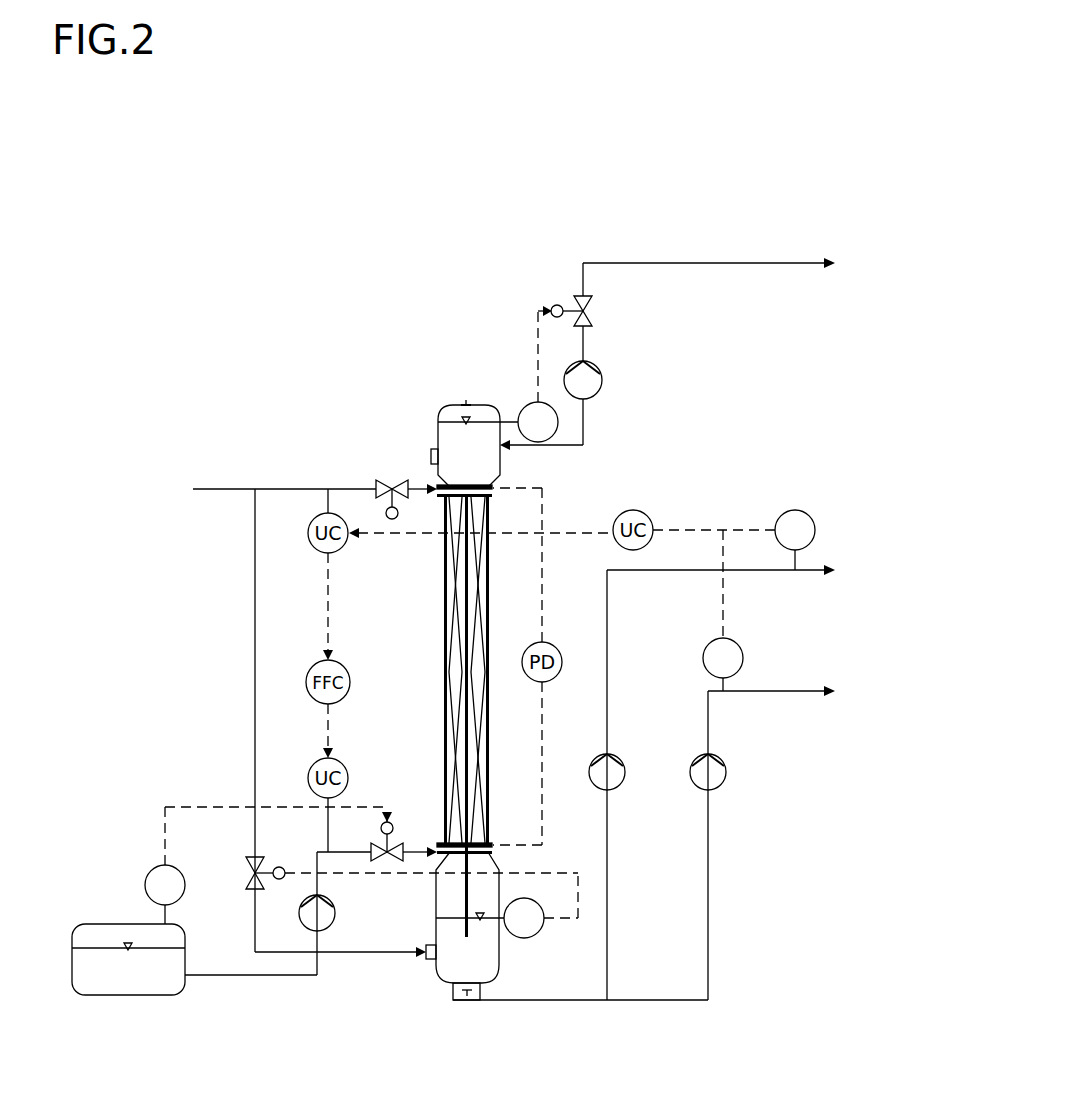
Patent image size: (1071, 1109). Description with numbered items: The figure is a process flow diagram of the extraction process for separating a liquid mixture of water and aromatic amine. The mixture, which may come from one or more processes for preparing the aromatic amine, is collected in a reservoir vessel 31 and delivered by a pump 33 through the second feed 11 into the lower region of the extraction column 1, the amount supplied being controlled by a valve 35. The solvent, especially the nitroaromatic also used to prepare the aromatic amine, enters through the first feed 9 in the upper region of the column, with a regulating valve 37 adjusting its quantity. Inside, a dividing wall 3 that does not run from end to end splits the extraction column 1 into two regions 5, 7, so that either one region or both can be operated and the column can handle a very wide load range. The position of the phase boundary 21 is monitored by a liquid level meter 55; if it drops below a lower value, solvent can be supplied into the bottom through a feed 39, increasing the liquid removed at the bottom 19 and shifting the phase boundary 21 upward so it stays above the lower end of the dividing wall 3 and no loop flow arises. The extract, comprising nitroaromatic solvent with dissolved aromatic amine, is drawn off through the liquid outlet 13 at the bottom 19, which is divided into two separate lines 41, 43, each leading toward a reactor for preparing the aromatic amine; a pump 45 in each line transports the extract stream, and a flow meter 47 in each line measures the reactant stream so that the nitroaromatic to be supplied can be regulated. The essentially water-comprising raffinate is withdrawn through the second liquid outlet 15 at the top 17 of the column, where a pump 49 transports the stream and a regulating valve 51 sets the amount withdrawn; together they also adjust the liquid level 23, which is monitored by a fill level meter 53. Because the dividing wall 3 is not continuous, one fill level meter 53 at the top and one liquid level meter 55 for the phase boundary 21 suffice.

The extraction column 1 is at (428, 652).
The dividing wall 3 is at (468, 650).
The region 5 is at (456, 707).
The region 7 is at (480, 728).
The first feed 9 is at (418, 487).
The second feed 11 is at (415, 848).
The liquid outlet 13 is at (466, 1002).
The second liquid outlet 15 is at (502, 447).
The top 17 is at (445, 406).
The bottom 19 is at (446, 985).
The phase boundary 21 is at (455, 925).
The liquid level 23 is at (484, 420).
The reservoir vessel 31 is at (137, 995).
The pump 33 is at (334, 917).
The valve 35 is at (405, 858).
The regulating valve 37 is at (385, 478).
The feed 39 is at (387, 955).
The line 41 is at (608, 960).
The line 43 is at (709, 893).
The pump 45 is at (606, 757).
The flow meter 47 is at (795, 510).
The pump 49 is at (602, 378).
The regulating valve 51 is at (590, 310).
The fill level meter 53 is at (528, 402).
The liquid level meter 55 is at (528, 938).